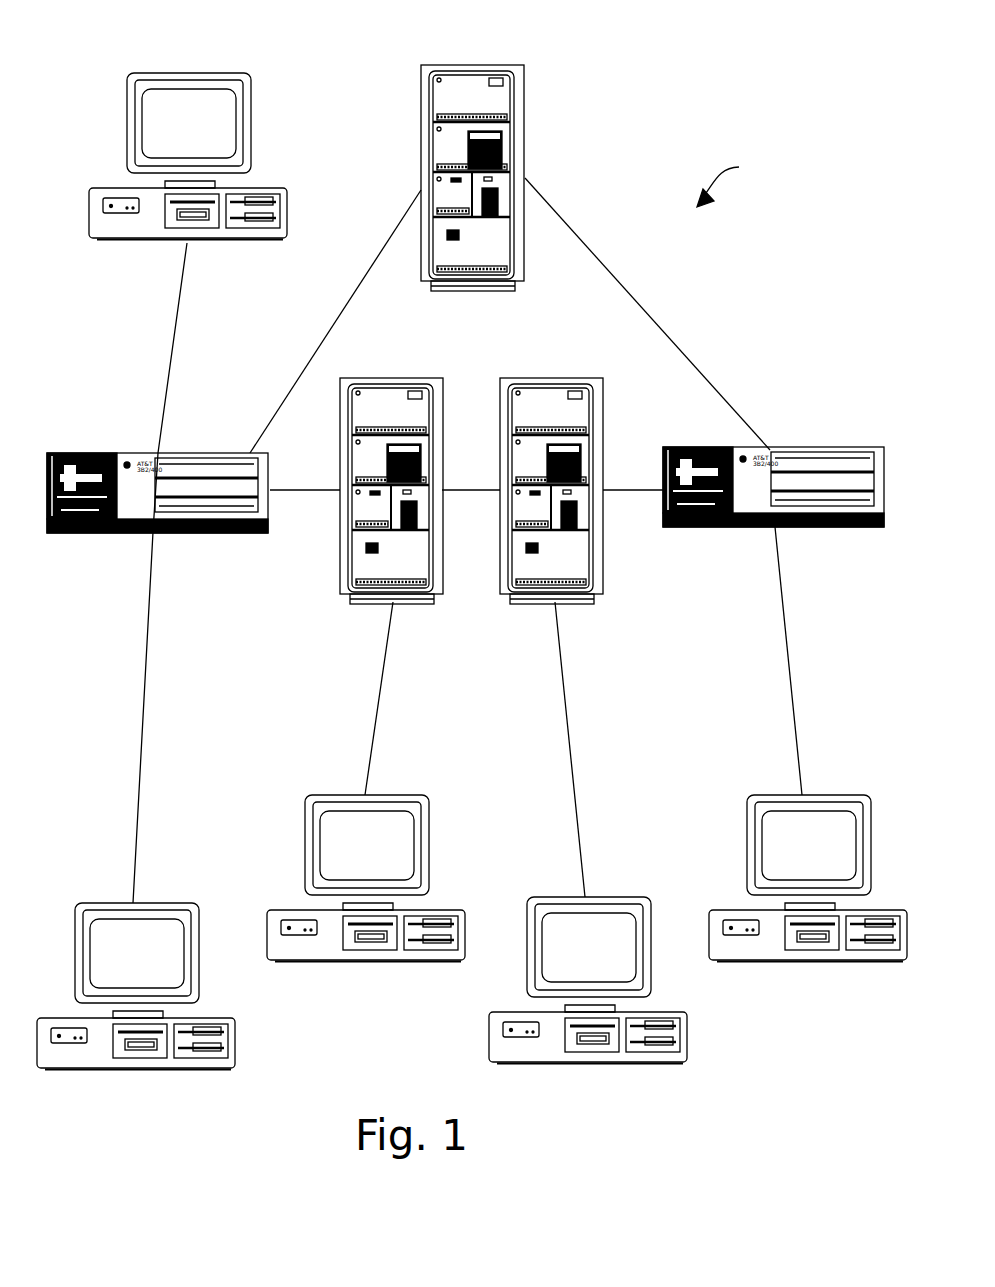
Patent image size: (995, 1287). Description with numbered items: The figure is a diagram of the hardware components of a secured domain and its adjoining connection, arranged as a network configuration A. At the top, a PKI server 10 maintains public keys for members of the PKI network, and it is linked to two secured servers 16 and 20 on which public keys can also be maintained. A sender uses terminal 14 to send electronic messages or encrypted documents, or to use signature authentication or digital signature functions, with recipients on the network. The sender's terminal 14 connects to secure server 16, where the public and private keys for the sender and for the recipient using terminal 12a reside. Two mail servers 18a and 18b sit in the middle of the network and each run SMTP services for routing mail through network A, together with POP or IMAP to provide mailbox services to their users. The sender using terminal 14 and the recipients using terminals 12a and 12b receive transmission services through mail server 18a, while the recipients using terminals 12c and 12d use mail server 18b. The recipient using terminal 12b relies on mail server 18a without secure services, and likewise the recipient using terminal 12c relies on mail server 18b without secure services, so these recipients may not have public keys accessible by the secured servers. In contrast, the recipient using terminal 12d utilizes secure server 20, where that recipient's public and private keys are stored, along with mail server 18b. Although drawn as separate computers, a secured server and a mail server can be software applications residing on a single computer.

The PKI server 10 is at (525, 128).
The terminal 12a is at (112, 905).
The terminal 12b is at (298, 912).
The terminal 12c is at (551, 897).
The terminal 12d is at (732, 905).
The terminal 14 is at (127, 123).
The secure server 16 is at (133, 453).
The mail server 18a is at (345, 525).
The mail server 18b is at (600, 530).
The secure server 20 is at (792, 447).
The network configuration A is at (738, 167).